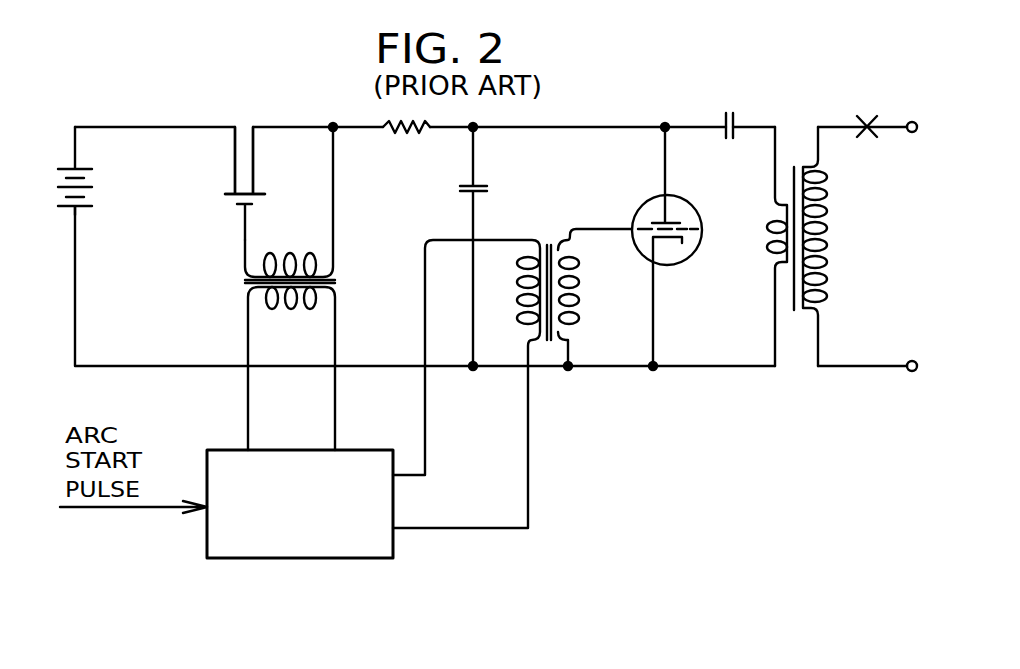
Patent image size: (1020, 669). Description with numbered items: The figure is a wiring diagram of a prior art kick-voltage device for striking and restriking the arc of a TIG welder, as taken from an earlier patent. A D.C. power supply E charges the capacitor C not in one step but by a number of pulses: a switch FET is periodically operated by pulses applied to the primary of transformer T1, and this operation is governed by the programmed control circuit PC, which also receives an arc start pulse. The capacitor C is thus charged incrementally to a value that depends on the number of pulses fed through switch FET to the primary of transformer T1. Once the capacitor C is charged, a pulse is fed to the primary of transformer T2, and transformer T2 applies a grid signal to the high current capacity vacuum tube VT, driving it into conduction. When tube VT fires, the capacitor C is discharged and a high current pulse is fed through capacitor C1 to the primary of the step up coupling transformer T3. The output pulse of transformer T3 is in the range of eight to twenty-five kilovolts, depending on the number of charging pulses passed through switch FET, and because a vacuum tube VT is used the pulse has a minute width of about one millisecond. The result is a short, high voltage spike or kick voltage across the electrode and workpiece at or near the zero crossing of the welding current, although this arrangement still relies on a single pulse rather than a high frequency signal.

The power supply E is at (87, 171).
The FET switch FET is at (219, 183).
The transformer T1 is at (247, 289).
The capacitor C is at (489, 189).
The transformer T2 is at (580, 287).
The vacuum tube VT is at (646, 199).
The capacitor C1 is at (727, 142).
The step up transformer T3 is at (793, 135).
The programmed control circuit PC is at (248, 560).